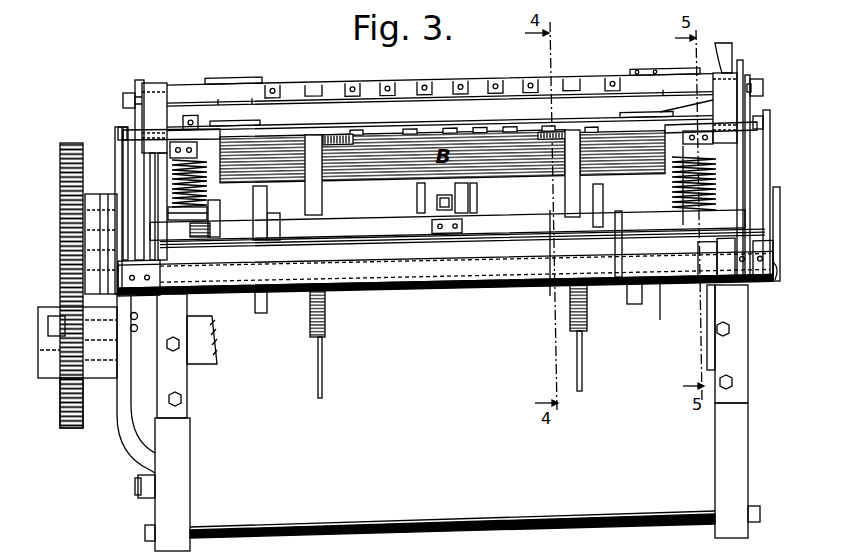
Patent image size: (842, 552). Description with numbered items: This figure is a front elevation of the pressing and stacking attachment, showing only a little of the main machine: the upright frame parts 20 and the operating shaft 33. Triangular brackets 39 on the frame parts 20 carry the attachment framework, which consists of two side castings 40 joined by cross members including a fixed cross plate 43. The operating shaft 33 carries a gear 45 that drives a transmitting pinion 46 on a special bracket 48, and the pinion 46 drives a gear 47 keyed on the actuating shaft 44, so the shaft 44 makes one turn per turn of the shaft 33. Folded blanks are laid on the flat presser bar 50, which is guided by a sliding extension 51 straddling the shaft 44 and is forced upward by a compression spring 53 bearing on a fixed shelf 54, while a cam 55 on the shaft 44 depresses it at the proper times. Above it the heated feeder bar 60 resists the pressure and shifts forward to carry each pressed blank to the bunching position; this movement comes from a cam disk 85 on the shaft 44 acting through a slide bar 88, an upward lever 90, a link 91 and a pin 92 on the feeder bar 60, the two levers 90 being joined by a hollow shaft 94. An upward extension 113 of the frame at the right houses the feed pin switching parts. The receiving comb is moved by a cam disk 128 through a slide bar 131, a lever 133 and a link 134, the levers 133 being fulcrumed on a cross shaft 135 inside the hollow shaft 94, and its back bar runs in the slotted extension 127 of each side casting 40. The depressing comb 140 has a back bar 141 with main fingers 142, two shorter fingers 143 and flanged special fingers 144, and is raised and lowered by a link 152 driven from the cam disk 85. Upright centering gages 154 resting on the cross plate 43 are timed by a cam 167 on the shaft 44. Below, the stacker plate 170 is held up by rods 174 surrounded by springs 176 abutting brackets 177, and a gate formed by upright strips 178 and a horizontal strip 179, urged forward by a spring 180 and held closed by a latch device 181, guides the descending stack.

The frame parts 20 is at (170, 509).
The operating shaft 33 is at (213, 352).
The triangular brackets 39 is at (173, 383).
The side castings 40 is at (155, 88).
The fixed cross plate 43 is at (477, 242).
The actuating shaft 44 is at (115, 259).
The gear 45 is at (65, 406).
The pinion 46 is at (72, 317).
The gear 47 is at (60, 146).
The bracket 48 is at (123, 430).
The presser bar 50 is at (183, 143).
The sliding extension 51 is at (263, 312).
The spring 53 is at (210, 201).
The shelf 54 is at (195, 216).
The cam 55 is at (273, 222).
The feeder bar 60 is at (285, 106).
The cam disk 85 is at (755, 142).
The slide bar 88 is at (733, 219).
The lever 90 is at (747, 88).
The link 91 is at (757, 85).
The pin 92 is at (742, 80).
The hollow shaft 94 is at (522, 265).
The upward extension 113 is at (733, 72).
The slotted extension 127 is at (134, 94).
The cam disk 128 is at (132, 160).
The slide bar 131 is at (157, 207).
The lever 133 is at (118, 160).
The link 134 is at (128, 128).
The cross shaft 135 is at (412, 288).
The depressing comb 140 is at (585, 77).
The back bar 141 is at (647, 73).
The fingers 142 is at (495, 80).
The fingers 143 is at (570, 78).
The special fingers 144 is at (237, 82).
The link 152 is at (730, 63).
The centering gages 154 is at (677, 137).
The cam 167 is at (547, 214).
The stacker plate 170 is at (542, 185).
The rods 174 is at (323, 372).
The springs 176 is at (328, 312).
The brackets 177 is at (327, 301).
The strips 178 is at (317, 198).
The horizontal strip 179 is at (503, 220).
The spring 180 is at (343, 138).
The latch device 181 is at (437, 204).